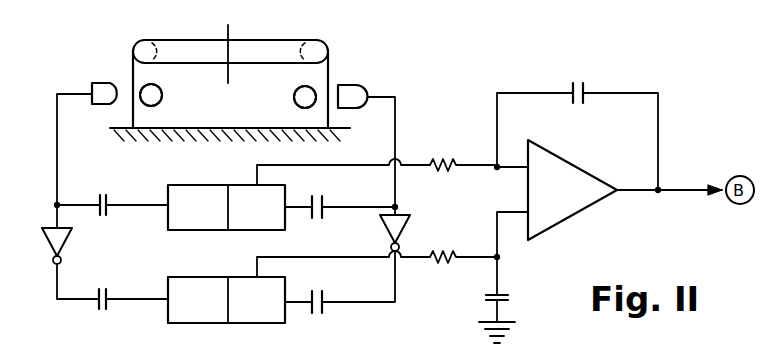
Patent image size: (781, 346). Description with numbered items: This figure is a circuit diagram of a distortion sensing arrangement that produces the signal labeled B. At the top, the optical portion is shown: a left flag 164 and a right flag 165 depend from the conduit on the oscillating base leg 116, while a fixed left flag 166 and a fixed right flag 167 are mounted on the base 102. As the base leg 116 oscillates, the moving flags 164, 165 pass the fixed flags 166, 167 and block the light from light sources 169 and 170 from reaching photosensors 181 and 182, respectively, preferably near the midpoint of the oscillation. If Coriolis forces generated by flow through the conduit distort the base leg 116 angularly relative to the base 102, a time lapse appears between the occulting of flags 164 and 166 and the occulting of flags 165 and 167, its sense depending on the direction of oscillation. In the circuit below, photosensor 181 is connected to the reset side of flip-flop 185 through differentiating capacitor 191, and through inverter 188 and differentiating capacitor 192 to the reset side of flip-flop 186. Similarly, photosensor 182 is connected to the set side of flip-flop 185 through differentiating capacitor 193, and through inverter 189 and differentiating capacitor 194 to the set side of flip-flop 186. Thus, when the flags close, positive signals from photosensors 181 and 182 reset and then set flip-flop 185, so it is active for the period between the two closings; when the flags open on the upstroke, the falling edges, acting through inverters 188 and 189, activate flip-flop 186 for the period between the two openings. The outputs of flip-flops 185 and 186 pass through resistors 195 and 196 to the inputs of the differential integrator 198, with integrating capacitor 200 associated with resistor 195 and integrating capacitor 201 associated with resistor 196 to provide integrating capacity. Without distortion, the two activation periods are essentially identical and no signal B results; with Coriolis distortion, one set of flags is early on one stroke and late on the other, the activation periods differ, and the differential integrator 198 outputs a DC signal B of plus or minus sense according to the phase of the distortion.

The base 102 is at (132, 122).
The base leg 116 is at (258, 40).
The left flag 164 is at (132, 66).
The right flag 165 is at (329, 72).
The fixed left flag 166 is at (134, 114).
The fixed right flag 167 is at (327, 118).
The light source 169 is at (160, 88).
The light source 170 is at (296, 91).
The photosensor 181 is at (91, 88).
The photosensor 182 is at (369, 88).
The flip-flop 185 is at (211, 185).
The flip-flop 186 is at (211, 277).
The inverter 188 is at (54, 258).
The inverter 189 is at (409, 220).
The differentiating capacitor 191 is at (100, 198).
The differentiating capacitor 192 is at (110, 294).
The differentiating capacitor 193 is at (324, 202).
The differentiating capacitor 194 is at (325, 298).
The resistor 195 is at (441, 161).
The resistor 196 is at (441, 252).
The differential integrator 198 is at (575, 163).
The integrating capacitor 200 is at (584, 103).
The integrating capacitor 201 is at (502, 294).